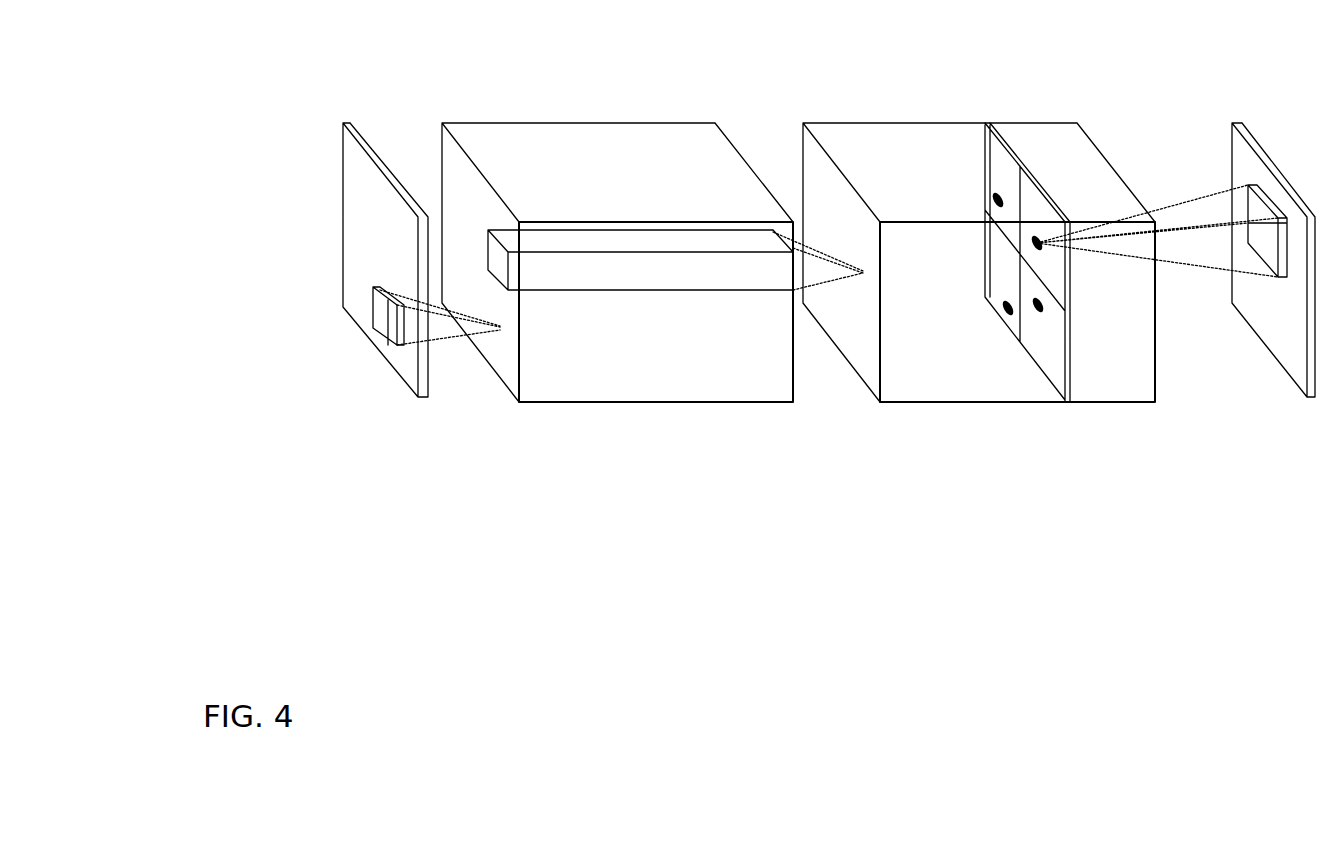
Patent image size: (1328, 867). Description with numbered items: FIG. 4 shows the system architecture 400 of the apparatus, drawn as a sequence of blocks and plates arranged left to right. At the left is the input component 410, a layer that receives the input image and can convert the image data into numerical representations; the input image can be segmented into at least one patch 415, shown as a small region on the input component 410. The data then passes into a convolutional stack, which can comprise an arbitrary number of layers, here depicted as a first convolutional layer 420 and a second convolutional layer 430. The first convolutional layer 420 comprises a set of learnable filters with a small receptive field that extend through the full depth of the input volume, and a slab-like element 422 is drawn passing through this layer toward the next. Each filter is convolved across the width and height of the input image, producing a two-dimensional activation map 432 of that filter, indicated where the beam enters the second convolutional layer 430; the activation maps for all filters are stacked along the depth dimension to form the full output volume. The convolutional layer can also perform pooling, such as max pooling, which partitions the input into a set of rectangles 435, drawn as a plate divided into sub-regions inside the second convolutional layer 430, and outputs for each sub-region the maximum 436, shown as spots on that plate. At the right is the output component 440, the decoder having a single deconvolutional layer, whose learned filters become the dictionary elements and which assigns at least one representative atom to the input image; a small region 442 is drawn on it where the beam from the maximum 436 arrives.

The optical system 400 is at (693, 605).
The input component 410 is at (420, 423).
The patch 415 is at (365, 302).
The first convolutional layer 420 is at (662, 423).
The waveguide slab 422 is at (491, 225).
The second convolutional layer 430 is at (957, 420).
The activation map 432 is at (860, 248).
The rectangles 435 is at (1073, 420).
The maximum 436 is at (1040, 238).
The output component 440 is at (1313, 413).
The output region 442 is at (1256, 178).